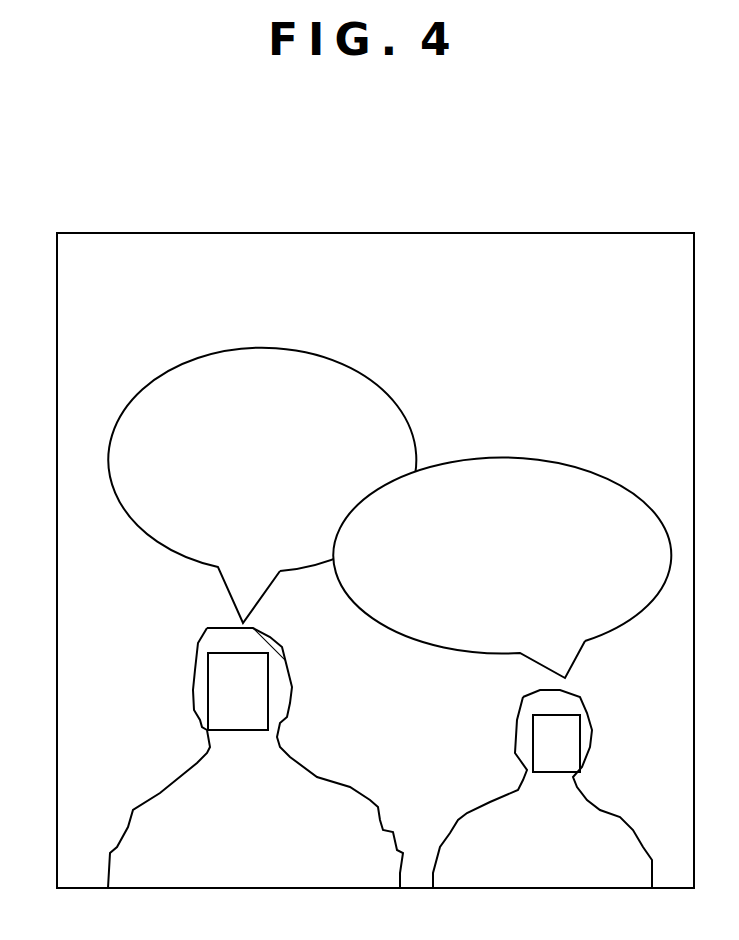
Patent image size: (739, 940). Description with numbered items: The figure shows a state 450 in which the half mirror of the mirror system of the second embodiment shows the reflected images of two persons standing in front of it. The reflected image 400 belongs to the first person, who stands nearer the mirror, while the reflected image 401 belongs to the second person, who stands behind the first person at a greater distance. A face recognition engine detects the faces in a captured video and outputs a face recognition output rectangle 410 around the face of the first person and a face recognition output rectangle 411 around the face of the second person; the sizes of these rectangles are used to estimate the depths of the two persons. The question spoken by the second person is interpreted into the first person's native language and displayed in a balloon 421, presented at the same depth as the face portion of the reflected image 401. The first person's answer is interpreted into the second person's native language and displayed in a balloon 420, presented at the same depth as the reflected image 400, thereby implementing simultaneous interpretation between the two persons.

The reflected image of first person 400 is at (330, 777).
The reflected image of second person 401 is at (487, 800).
The face recognition output rectangle 410 is at (197, 678).
The face recognition output rectangle 411 is at (582, 736).
The balloon 420 is at (158, 376).
The balloon 421 is at (573, 464).
The state 450 is at (373, 233).